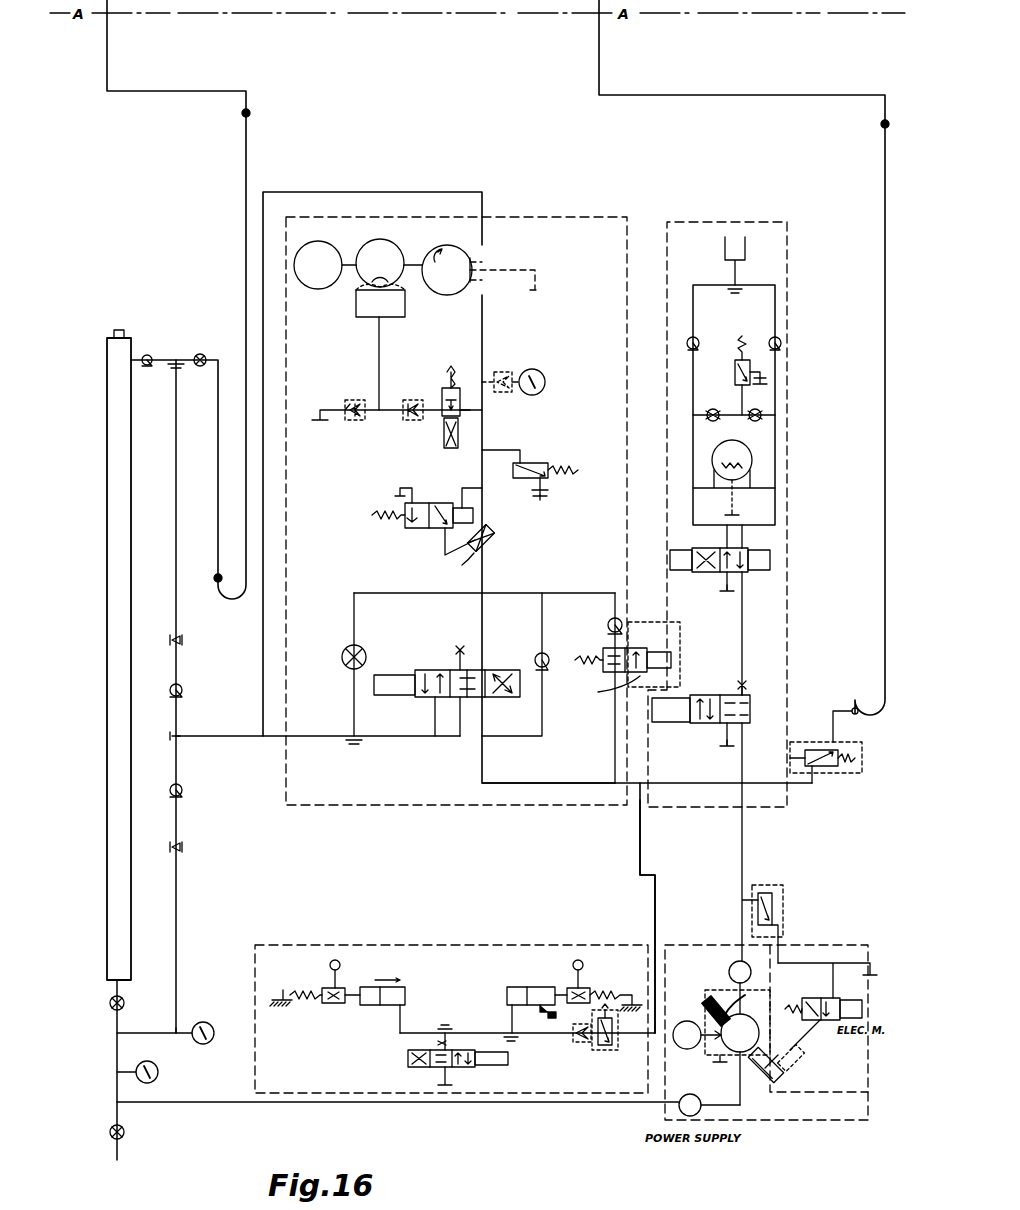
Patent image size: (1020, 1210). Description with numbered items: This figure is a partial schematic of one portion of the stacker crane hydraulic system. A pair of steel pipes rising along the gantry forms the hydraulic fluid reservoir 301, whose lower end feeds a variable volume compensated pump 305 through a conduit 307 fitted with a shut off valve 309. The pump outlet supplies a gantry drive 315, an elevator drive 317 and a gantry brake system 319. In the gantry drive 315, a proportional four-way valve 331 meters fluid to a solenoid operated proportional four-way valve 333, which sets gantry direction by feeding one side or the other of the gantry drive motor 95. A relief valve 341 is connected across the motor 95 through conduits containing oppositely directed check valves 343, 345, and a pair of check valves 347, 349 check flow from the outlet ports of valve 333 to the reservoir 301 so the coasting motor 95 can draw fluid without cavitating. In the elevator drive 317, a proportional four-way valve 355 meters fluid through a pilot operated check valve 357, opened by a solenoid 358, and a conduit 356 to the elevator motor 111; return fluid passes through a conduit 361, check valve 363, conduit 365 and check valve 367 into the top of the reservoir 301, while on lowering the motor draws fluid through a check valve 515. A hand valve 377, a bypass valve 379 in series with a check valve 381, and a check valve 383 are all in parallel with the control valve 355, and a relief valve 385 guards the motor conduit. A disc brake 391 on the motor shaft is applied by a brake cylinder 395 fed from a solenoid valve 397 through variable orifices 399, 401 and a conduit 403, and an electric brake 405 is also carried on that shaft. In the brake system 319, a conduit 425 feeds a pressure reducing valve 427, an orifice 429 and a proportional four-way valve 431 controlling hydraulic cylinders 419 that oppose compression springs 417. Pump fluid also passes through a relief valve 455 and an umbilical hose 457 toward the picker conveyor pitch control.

The gantry drive motor 95 is at (744, 443).
The elevator motor 111 is at (447, 295).
The hydraulic fluid reservoir 301 is at (322, 428).
The variable volume compensated pump 305 is at (736, 998).
The conduit 307 is at (212, 1104).
The shut off valve 309 is at (104, 998).
The gantry drive 315 is at (752, 810).
The elevator drive 317 is at (566, 838).
The gantry brake system 319 is at (556, 950).
The proportional four-way valve 331 is at (748, 688).
The solenoid operated proportional four-way valve 333 is at (760, 575).
The relief valve 341 is at (732, 372).
The check valve 343 is at (712, 422).
The check valve 345 is at (760, 420).
The check valve 347 is at (697, 338).
The check valve 349 is at (780, 340).
The proportional four-way valve 355 is at (478, 697).
The conduit 356 is at (484, 330).
The pilot operated check valve 357 is at (488, 550).
The solenoid 358 is at (408, 528).
The conduit 361 is at (486, 207).
The check valve 363 is at (180, 696).
The conduit 365 is at (178, 622).
The check valve 367 is at (150, 354).
The hand valve 377 is at (366, 647).
The bypass valve 379 is at (601, 687).
The check valve 381 is at (622, 628).
The check valve 383 is at (528, 648).
The relief valve 385 is at (530, 455).
The disc brake 391 is at (398, 243).
The brake cylinder 395 is at (365, 317).
The solenoid valve 397 is at (472, 356).
The variable orifice 399 is at (428, 384).
The variable orifice 401 is at (366, 384).
The conduit 403 is at (381, 352).
The electric brake 405 is at (314, 289).
The compression spring 417 is at (315, 975).
The hydraulic cylinder 419 is at (408, 990).
The conduit 425 is at (656, 915).
The pressure reducing valve 427 is at (606, 1052).
The orifice 429 is at (578, 1044).
The proportional four-way valve 431 is at (405, 1068).
The relief valve 455 is at (823, 773).
The umbilical hose 457 is at (246, 178).
The check valve 515 is at (182, 794).